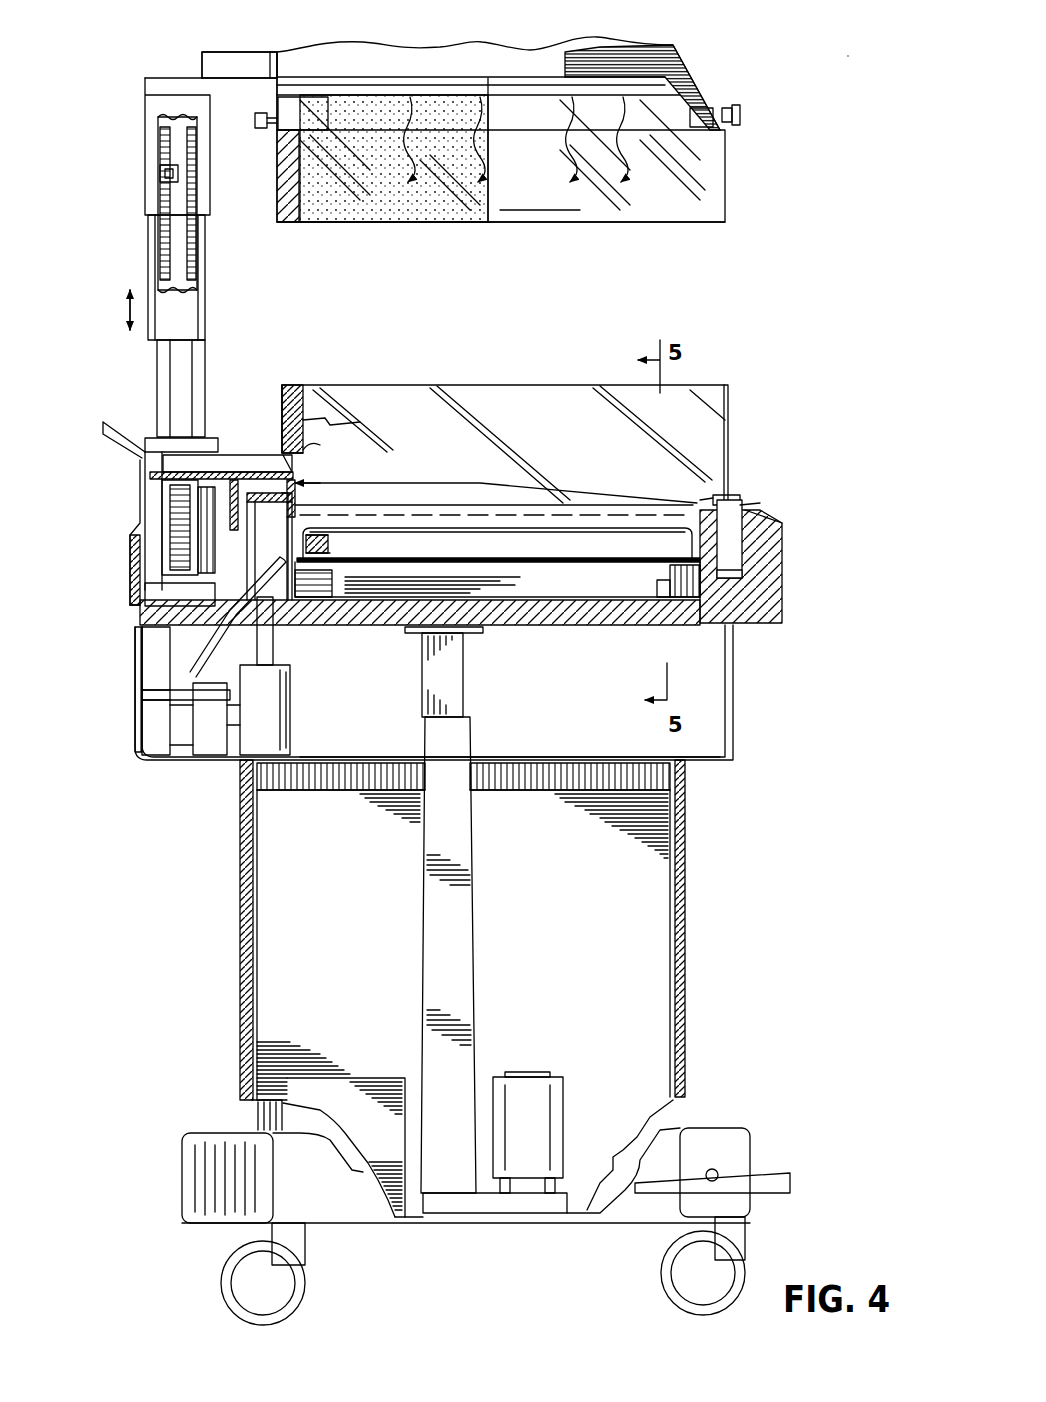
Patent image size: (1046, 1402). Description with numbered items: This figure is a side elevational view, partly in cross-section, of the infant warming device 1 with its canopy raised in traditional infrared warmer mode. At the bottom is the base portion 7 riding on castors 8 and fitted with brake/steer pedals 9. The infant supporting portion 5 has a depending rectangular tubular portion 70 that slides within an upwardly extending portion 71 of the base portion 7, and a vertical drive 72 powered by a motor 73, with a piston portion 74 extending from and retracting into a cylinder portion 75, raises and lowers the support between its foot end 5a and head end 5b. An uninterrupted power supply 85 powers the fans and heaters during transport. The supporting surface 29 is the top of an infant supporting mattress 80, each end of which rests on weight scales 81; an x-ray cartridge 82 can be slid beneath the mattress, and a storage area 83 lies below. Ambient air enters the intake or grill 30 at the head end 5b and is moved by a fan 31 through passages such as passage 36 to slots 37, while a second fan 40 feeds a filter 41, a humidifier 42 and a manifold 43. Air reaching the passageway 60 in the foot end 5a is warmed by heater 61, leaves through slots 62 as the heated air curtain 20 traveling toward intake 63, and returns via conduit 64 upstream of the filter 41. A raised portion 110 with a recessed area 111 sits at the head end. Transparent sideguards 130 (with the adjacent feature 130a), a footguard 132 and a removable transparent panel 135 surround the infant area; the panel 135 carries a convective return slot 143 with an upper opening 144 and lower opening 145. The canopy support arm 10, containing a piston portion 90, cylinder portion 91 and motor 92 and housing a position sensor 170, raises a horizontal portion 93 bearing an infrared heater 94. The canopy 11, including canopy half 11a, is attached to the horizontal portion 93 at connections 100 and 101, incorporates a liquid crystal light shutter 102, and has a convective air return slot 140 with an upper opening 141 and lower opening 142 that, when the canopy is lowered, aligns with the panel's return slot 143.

The infant warming device 1 is at (848, 55).
The infant supporting portion 5 is at (130, 575).
The foot end 5a is at (785, 590).
The head end 5b is at (130, 592).
The base portion 7 is at (752, 1123).
The castors 8 is at (222, 1276).
The brake/steer pedals 9 is at (788, 1180).
The canopy support arm 10 is at (145, 215).
The canopy 11 is at (728, 205).
The canopy half 11a is at (602, 210).
The heated air curtain 20 is at (400, 480).
The supporting surface 29 is at (612, 520).
The intake or grill 30 is at (130, 715).
The fan 31 is at (150, 648).
The passage 36 is at (760, 512).
The slots 37 is at (752, 503).
The fan 40 is at (150, 752).
The filter 41 is at (213, 750).
The humidifier 42 is at (285, 725).
The manifold 43 is at (273, 635).
The passageway 60 is at (745, 540).
The heater 61 is at (745, 574).
The slots 62 is at (710, 495).
The intake 63 is at (270, 486).
The conduit 64 is at (145, 695).
The depending rectangular tubular portion 70 is at (688, 895).
The upwardly extending portion 71 is at (668, 960).
The vertical drive 72 is at (418, 963).
The motor 73 is at (565, 1095).
The piston portion 74 is at (465, 680).
The cylinder portion 75 is at (470, 975).
The infant supporting mattress 80 is at (548, 535).
The weight scales 81 is at (332, 600).
The x-ray cartridge 82 is at (545, 580).
The storage area 83 is at (590, 728).
The uninterrupted power supply 85 is at (350, 1095).
The piston portion 90 is at (152, 500).
The cylinder portion 91 is at (190, 262).
The motor 92 is at (162, 510).
The horizontal portion 93 is at (258, 50).
The infrared heater 94 is at (520, 100).
The canopy connection 100 is at (278, 135).
The canopy connection 101 is at (735, 108).
The liquid crystal light shutter 102 is at (445, 218).
The raised portion 110 is at (135, 452).
The recessed area 111 is at (236, 455).
The sideguards 130 is at (520, 392).
The cover flange 130a is at (735, 495).
The footguard 132 is at (730, 388).
The transparent panel 135 is at (285, 388).
The convective air return slot 140 is at (285, 188).
The upper opening 141 is at (262, 112).
The lower opening 142 is at (280, 224).
The convective return slot 143 is at (340, 420).
The upper opening 144 is at (295, 388).
The lower opening 145 is at (300, 460).
The position sensor 170 is at (160, 175).